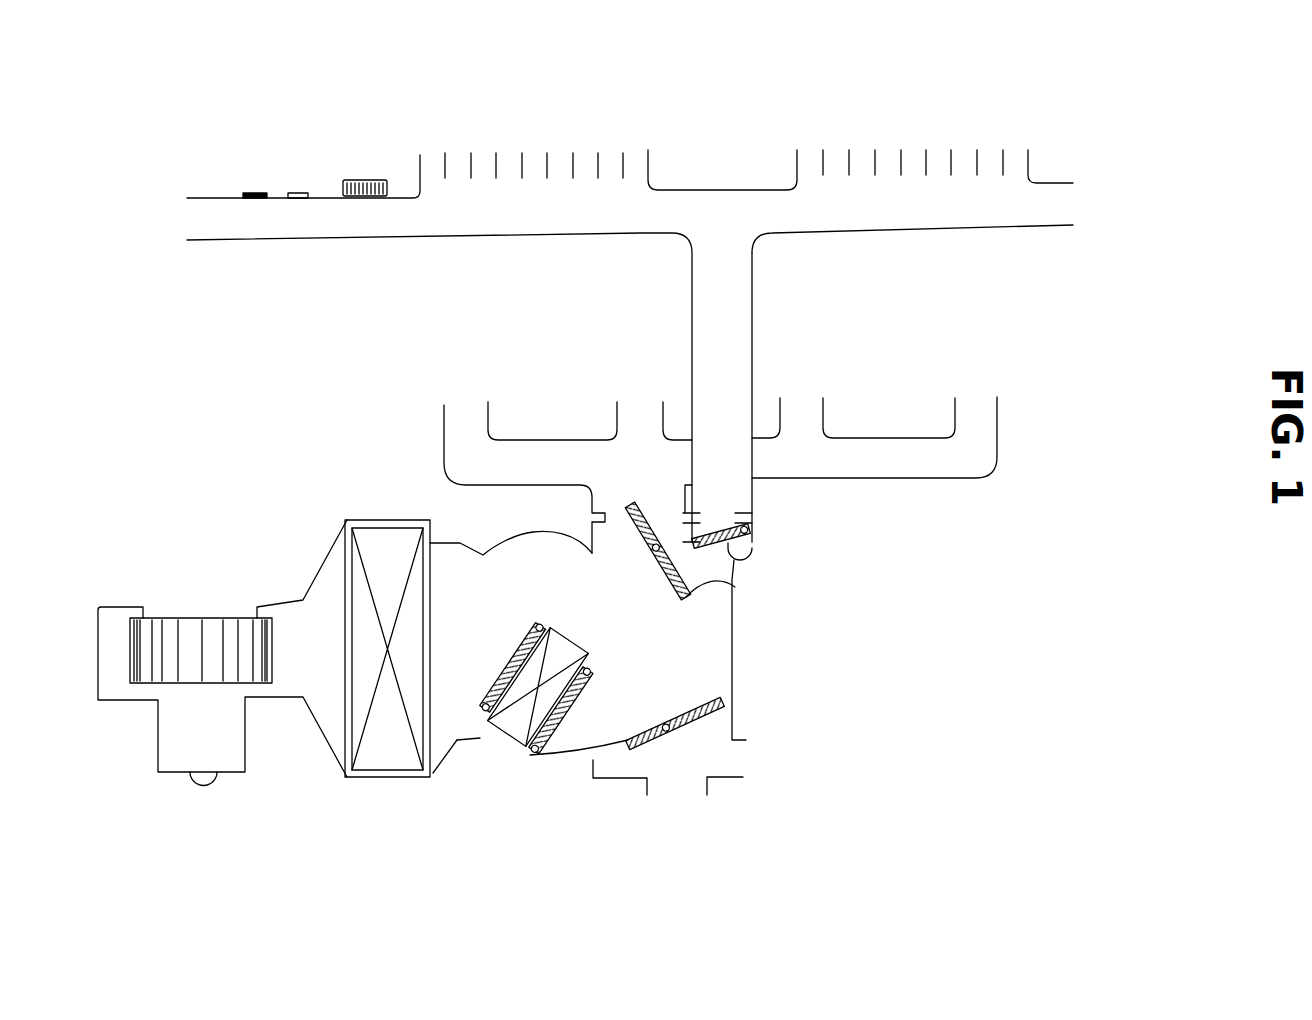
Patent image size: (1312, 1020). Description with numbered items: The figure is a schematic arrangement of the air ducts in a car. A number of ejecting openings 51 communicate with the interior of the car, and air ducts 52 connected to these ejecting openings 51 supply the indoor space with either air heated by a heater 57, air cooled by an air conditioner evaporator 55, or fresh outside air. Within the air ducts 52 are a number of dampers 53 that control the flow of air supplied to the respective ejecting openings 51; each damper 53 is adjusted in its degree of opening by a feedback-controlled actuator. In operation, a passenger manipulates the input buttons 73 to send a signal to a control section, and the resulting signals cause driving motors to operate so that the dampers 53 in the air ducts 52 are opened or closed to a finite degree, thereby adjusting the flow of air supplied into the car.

The ejecting openings 51 is at (532, 155).
The air ducts 52 is at (712, 667).
The dampers 53 is at (735, 587).
The air conditioner evaporator 55 is at (381, 750).
The heater 57 is at (512, 718).
The input buttons 73 is at (363, 182).